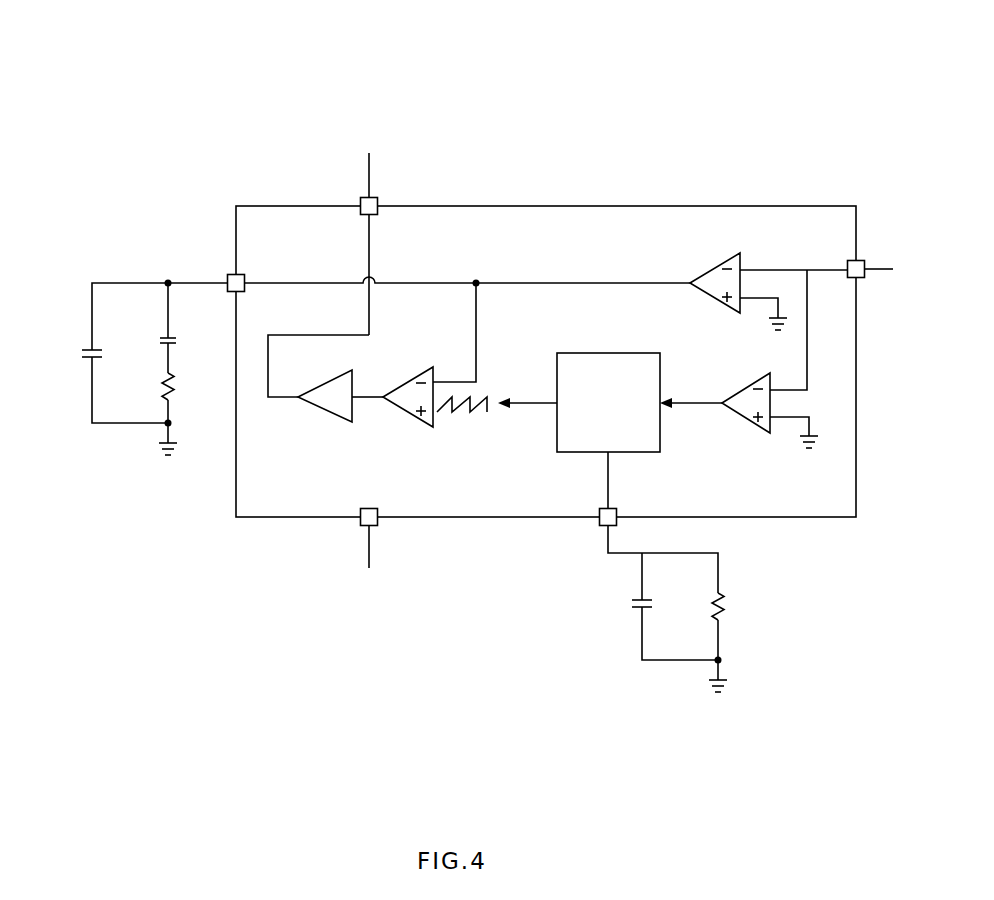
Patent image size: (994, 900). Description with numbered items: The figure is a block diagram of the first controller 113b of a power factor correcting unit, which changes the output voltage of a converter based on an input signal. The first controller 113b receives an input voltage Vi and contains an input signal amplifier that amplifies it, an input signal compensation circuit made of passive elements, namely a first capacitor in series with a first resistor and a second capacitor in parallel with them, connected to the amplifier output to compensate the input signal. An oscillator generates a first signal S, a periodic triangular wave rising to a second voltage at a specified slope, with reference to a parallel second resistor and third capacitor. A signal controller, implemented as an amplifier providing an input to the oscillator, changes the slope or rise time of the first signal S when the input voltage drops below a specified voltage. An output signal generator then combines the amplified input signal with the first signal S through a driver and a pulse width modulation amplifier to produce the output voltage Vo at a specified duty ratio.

The first controller 113b is at (205, 100).
The first signal S is at (476, 432).